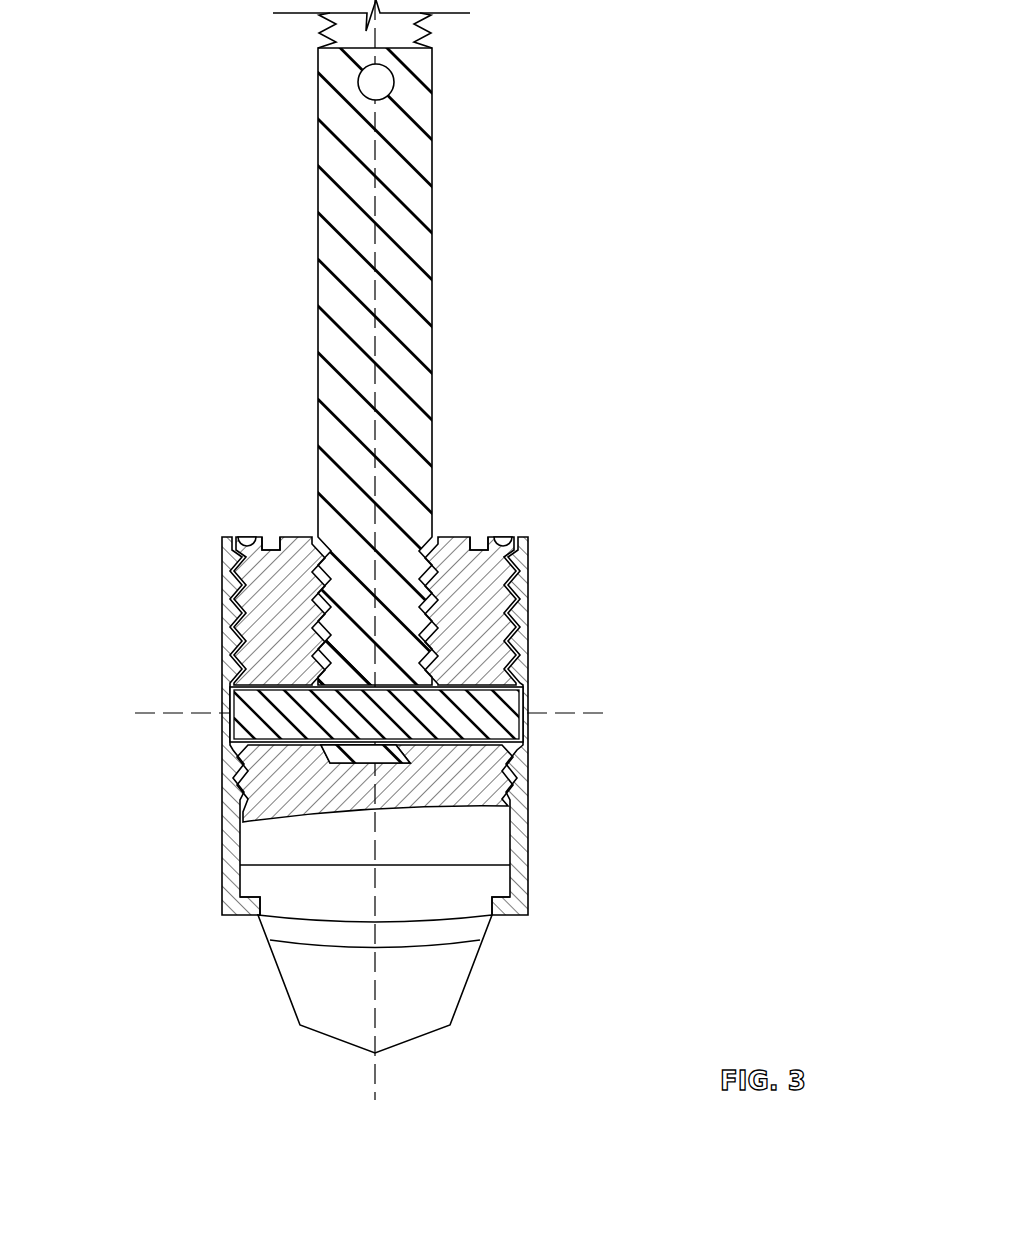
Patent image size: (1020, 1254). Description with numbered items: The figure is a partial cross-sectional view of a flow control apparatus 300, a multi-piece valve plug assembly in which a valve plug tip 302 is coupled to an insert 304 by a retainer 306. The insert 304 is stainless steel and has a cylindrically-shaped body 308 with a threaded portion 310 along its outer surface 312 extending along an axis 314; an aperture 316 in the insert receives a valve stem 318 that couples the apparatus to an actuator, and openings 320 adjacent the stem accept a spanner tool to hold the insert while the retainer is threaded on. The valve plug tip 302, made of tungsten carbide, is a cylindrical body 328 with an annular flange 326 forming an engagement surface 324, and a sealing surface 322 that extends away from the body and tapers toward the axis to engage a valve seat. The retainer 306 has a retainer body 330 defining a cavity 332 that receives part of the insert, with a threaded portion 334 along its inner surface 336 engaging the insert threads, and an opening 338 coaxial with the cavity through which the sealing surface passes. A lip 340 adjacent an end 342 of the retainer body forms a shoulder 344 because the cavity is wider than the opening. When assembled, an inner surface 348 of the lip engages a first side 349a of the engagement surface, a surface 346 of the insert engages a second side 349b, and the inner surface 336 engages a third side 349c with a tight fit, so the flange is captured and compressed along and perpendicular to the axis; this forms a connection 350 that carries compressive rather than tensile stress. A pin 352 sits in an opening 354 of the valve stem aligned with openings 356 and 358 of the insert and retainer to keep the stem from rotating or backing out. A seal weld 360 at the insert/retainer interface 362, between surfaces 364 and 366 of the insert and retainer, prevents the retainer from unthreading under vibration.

The flow control apparatus 300 is at (678, 68).
The valve plug tip 302 is at (447, 990).
The insert 304 is at (470, 637).
The retainer 306 is at (528, 790).
The cylindrically-shaped body 308 is at (492, 608).
The threaded portion 310 is at (513, 645).
The outer surface 312 is at (226, 757).
The axis 314 is at (375, 205).
The aperture 316 is at (480, 545).
The valve stem 318 is at (432, 345).
The openings 320 is at (505, 540).
The sealing surface 322 is at (300, 1020).
The engagement surface 324 is at (518, 892).
The flange 326 is at (225, 883).
The cylindrical body 328 is at (273, 943).
The retainer body 330 is at (513, 750).
The cavity 332 is at (512, 845).
The threaded portion 334 is at (235, 790).
The inner surface 336 is at (245, 835).
The opening 338 is at (260, 905).
The lip 340 is at (250, 918).
The end 342 is at (222, 907).
The shoulder 344 is at (512, 917).
The surface 346 is at (378, 850).
The inner surface 348 is at (252, 896).
The first side 349a is at (503, 885).
The second side 349b is at (490, 862).
The third side 349c is at (507, 885).
The connection 350 is at (533, 921).
The pin 352 is at (297, 703).
The opening 354 is at (327, 645).
The opening 356 is at (228, 688).
The opening 358 is at (222, 718).
The seal weld 360 is at (247, 533).
The insert/retainer interface 362 is at (247, 463).
The surface 364 is at (270, 537).
The surface 366 is at (235, 540).